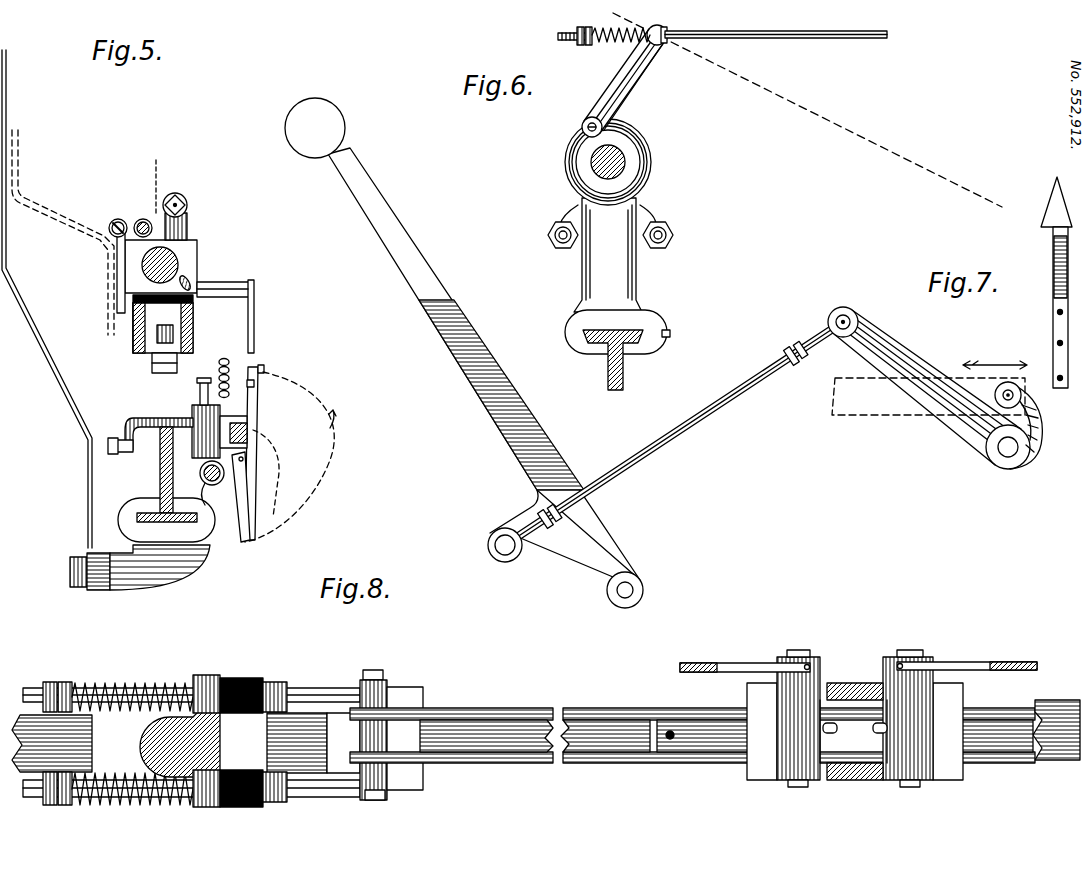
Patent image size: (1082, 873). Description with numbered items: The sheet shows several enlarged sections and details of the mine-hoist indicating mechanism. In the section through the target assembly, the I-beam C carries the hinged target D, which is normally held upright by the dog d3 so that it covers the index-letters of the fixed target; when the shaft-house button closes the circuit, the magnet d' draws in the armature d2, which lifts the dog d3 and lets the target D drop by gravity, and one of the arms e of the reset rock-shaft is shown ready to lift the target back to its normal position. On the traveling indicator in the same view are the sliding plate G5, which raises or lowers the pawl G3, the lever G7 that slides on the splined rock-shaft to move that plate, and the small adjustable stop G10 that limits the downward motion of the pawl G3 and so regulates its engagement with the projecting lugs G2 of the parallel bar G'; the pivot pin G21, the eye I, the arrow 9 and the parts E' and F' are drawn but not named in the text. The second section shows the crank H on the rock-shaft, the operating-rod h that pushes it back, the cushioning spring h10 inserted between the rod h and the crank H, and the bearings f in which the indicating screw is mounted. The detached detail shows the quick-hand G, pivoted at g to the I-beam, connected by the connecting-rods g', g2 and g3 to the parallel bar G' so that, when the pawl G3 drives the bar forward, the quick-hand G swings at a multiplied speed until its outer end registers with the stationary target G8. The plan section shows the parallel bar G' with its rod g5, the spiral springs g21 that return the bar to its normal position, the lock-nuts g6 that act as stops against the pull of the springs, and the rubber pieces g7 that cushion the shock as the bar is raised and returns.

In FIG. 5, the stationary target G8 is at (16, 172).
In FIG. 7, the stationary target G8 is at (1052, 203).
In FIG. 5, the direction arrow 9 is at (195, 172).
In FIG. 5, the projecting lugs G2 is at (161, 306).
In FIG. 8, the projecting lugs G2 is at (650, 745).
In FIG. 5, the sliding plate G5 is at (120, 266).
In FIG. 5, the adjustable stop G10 is at (197, 300).
In FIG. 5, the parallel bar G' is at (210, 346).
In FIG. 7, the parallel bar G' is at (929, 418).
In FIG. 8, the parallel bar G' is at (715, 721).
In FIG. 5, the pawl G3 is at (133, 303).
In FIG. 5, the pivot eye I is at (187, 205).
In FIG. 5, the lever G7 is at (118, 220).
In FIG. 5, the pivot pin G21 is at (143, 220).
In FIG. 6, the pivot pin G21 is at (582, 126).
In FIG. 5, the dog d3 is at (263, 369).
In FIG. 5, the magnet d' is at (244, 418).
In FIG. 5, the I-beam C is at (160, 475).
In FIG. 5, the pivot g is at (121, 571).
In FIG. 7, the pivot g is at (641, 591).
In FIG. 5, the arms e is at (213, 538).
In FIG. 5, the armature d2 is at (200, 472).
In FIG. 5, the hinged target D is at (243, 500).
In FIG. 5, the catch E' is at (260, 476).
In FIG. 6, the hub F' is at (630, 215).
In FIG. 6, the bearings f is at (575, 168).
In FIG. 6, the rod g5 is at (650, 233).
In FIG. 8, the rod g5 is at (325, 710).
In FIG. 6, the crank H is at (633, 85).
In FIG. 6, the operating-rod h is at (837, 39).
In FIG. 6, the spring h10 is at (613, 45).
In FIG. 7, the quick-hand G is at (462, 339).
In FIG. 7, the connecting-rod g' is at (674, 433).
In FIG. 7, the connecting-rod g2 is at (938, 396).
In FIG. 8, the connecting-rod g2 is at (745, 664).
In FIG. 7, the connecting-rod g3 is at (1037, 436).
In FIG. 8, the spring g21 is at (150, 683).
In FIG. 8, the rubber pieces g7 is at (238, 680).
In FIG. 8, the lock-nuts g6 is at (270, 680).